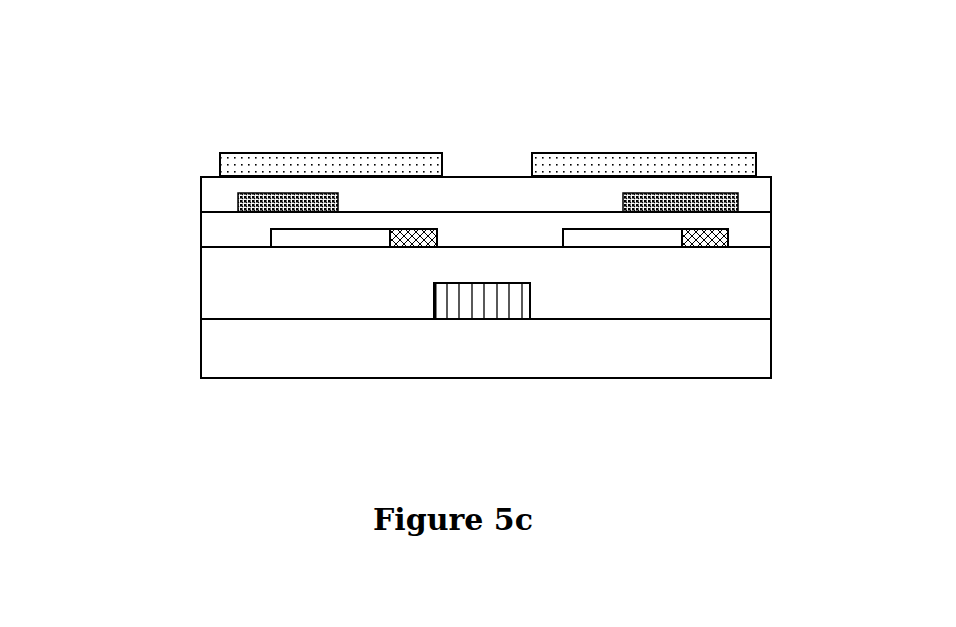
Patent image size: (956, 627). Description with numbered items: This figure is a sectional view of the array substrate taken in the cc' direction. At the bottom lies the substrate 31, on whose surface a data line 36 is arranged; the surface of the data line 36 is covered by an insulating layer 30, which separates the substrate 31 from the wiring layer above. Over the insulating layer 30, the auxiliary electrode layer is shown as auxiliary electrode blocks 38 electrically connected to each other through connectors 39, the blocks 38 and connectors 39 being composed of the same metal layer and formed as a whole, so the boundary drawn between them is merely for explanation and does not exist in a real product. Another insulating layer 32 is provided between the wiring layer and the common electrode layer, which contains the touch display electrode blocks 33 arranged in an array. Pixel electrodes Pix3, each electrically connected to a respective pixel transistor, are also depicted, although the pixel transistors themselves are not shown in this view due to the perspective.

The insulating layer 30 is at (682, 259).
The substrate 31 is at (484, 347).
The insulating layer 32 is at (207, 187).
The touch display electrode block 33 is at (563, 155).
The data line 36 is at (489, 297).
The auxiliary electrode block 38 is at (362, 239).
The connector 39 is at (422, 240).
The pixel electrode Pix3 is at (712, 195).